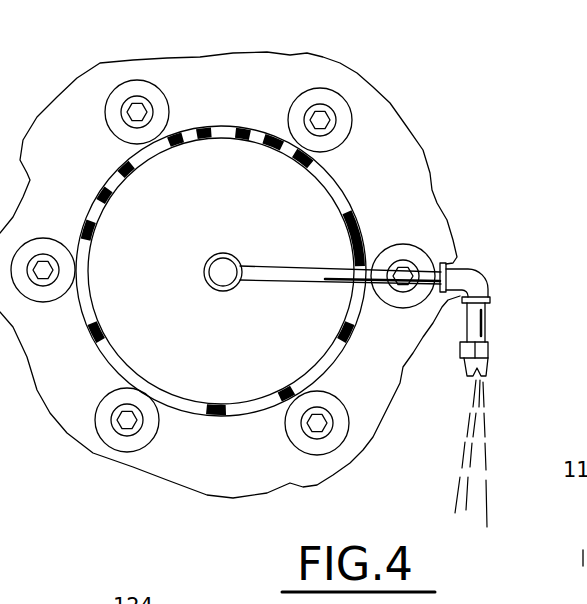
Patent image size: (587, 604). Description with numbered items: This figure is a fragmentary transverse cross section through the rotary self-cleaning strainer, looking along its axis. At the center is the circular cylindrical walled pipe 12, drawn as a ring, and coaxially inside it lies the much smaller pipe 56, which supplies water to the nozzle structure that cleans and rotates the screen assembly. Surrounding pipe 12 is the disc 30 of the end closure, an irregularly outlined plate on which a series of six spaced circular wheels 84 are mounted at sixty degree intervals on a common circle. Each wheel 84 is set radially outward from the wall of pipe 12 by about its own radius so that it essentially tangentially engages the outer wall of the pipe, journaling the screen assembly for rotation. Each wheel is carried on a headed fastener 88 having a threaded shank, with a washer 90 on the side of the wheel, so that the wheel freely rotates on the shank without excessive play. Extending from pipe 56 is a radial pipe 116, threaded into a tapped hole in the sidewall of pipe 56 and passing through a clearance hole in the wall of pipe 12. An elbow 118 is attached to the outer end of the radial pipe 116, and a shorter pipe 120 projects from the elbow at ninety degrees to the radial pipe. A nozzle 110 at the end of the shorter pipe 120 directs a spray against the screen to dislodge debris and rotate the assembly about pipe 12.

The circular cylindrical walled pipe 12 is at (348, 182).
The disc 30 is at (410, 147).
The pipe 56 is at (213, 254).
The wheel 84 is at (37, 240).
The headed fastener 88 is at (143, 110).
The washer 90 is at (130, 127).
The nozzle 110 is at (488, 365).
The radial pipe 116 is at (295, 268).
The elbow 118 is at (473, 267).
The shorter pipe 120 is at (486, 320).